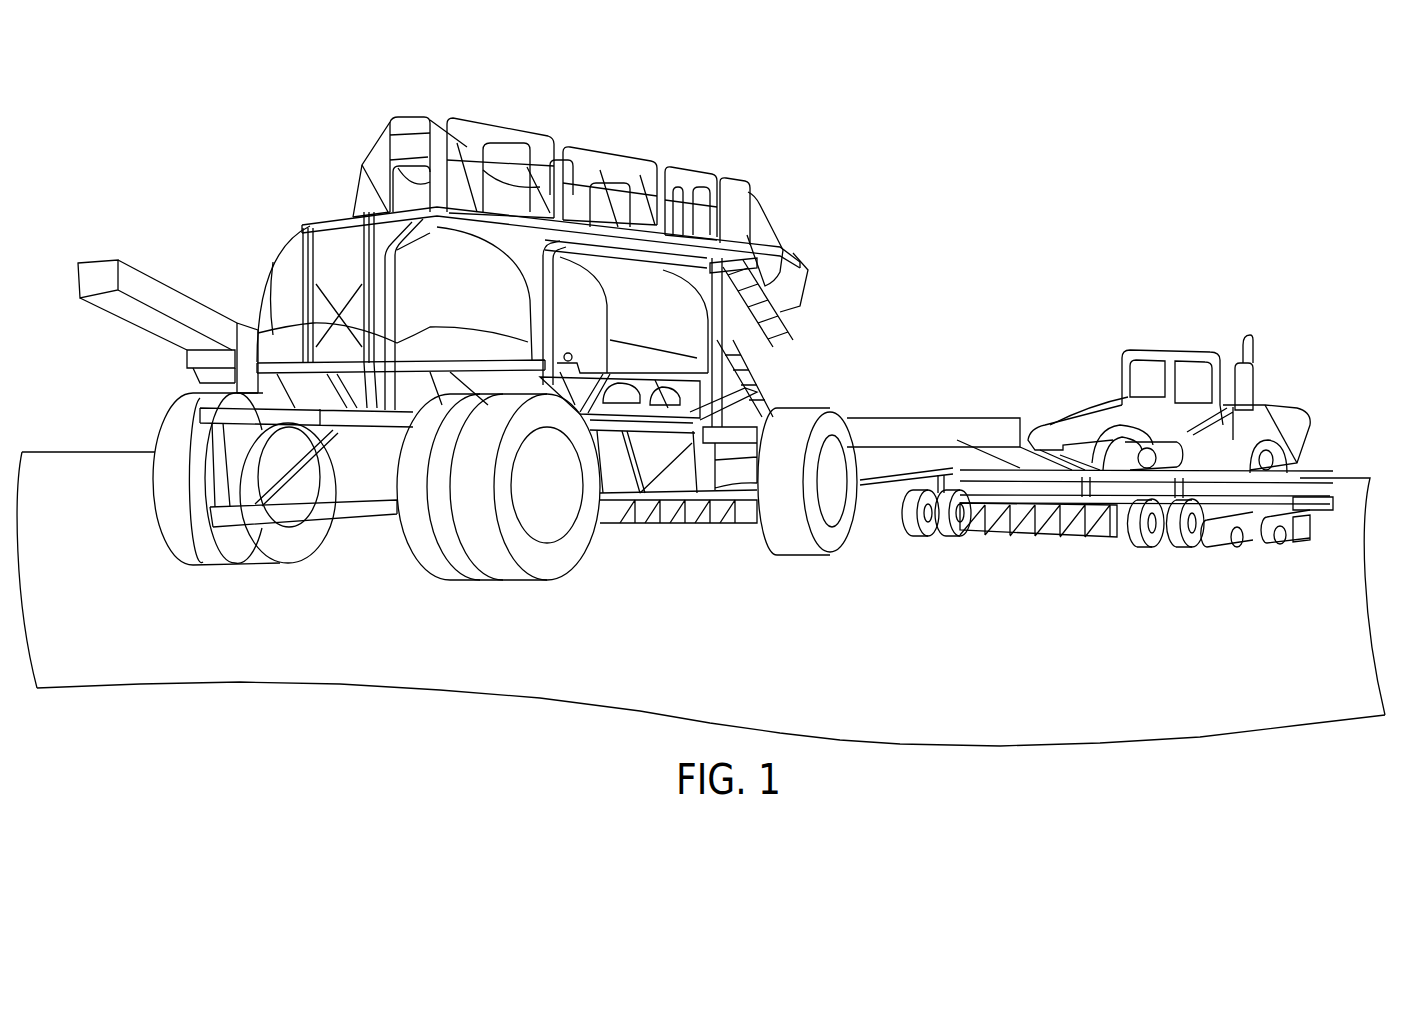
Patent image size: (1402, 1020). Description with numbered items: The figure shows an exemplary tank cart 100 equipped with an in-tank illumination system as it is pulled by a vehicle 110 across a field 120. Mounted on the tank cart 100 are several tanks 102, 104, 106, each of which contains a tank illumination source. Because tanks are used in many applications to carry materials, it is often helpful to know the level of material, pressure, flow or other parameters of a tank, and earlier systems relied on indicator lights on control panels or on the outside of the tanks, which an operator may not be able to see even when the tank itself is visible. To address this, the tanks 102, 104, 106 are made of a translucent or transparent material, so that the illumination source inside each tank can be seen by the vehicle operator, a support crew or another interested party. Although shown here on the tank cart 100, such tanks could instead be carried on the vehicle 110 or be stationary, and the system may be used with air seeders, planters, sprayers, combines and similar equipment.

The tank cart 100 is at (298, 150).
The tank 102 is at (473, 302).
The tank 104 is at (593, 336).
The tank 106 is at (663, 326).
The vehicle 110 is at (1050, 350).
The field 120 is at (838, 613).